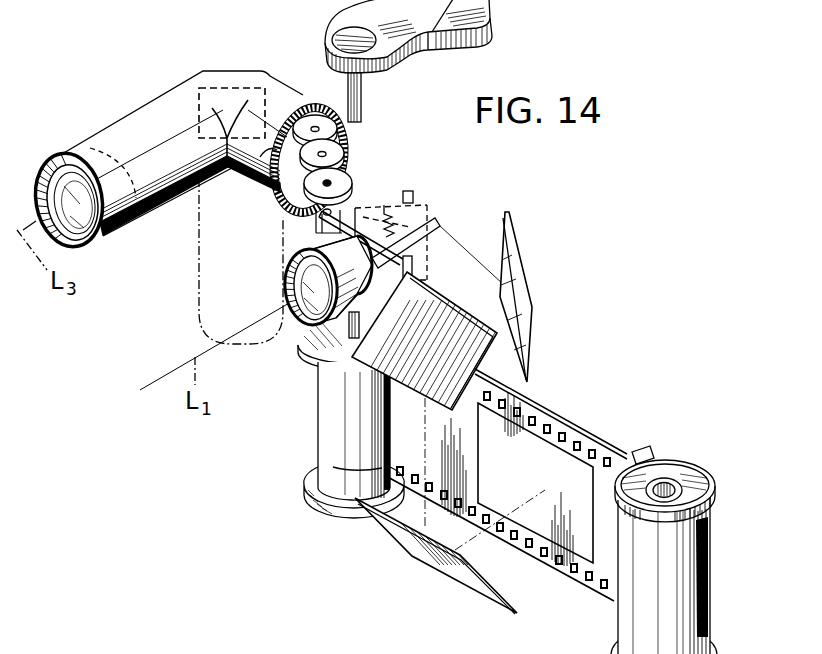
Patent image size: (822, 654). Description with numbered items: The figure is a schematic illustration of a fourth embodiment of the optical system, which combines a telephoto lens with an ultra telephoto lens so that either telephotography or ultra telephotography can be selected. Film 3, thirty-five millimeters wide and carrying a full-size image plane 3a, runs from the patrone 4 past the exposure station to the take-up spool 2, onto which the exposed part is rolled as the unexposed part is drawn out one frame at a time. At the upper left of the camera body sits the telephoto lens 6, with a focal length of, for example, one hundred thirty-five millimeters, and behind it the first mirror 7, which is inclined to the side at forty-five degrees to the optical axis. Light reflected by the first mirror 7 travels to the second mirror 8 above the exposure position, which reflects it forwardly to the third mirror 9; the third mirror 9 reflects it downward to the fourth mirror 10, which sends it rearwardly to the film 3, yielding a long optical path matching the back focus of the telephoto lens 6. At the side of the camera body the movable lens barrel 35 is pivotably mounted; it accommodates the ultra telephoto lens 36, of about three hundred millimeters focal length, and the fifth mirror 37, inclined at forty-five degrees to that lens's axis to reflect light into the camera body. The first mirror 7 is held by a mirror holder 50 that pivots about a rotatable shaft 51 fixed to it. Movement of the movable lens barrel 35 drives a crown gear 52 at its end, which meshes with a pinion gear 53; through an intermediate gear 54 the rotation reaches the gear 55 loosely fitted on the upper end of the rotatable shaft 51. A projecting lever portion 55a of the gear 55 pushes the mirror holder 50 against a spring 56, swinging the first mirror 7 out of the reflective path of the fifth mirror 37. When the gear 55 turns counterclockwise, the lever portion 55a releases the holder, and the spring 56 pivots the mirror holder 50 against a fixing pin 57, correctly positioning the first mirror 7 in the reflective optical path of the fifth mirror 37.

The take-up spool 2 is at (332, 430).
The film 3 is at (570, 567).
The image plane 3a is at (567, 470).
The patrone 4 is at (633, 626).
The telephoto lens 6 is at (307, 328).
The first mirror 7 is at (441, 181).
The second mirror 8 is at (512, 262).
The third mirror 9 is at (413, 378).
The fourth mirror 10 is at (407, 547).
The movable lens barrel 35 is at (156, 106).
The ultra telephoto lens 36 is at (85, 214).
The fifth mirror 37 is at (222, 88).
The mirror holder 50 is at (362, 243).
The rotatable shaft 51 is at (331, 182).
The crown gear 52 is at (263, 176).
The pinion gear 53 is at (310, 125).
The intermediate gear 54 is at (340, 150).
The gear 55 is at (304, 211).
The projecting lever portion 55a is at (417, 167).
The spring 56 is at (428, 200).
The fixing pin 57 is at (412, 188).